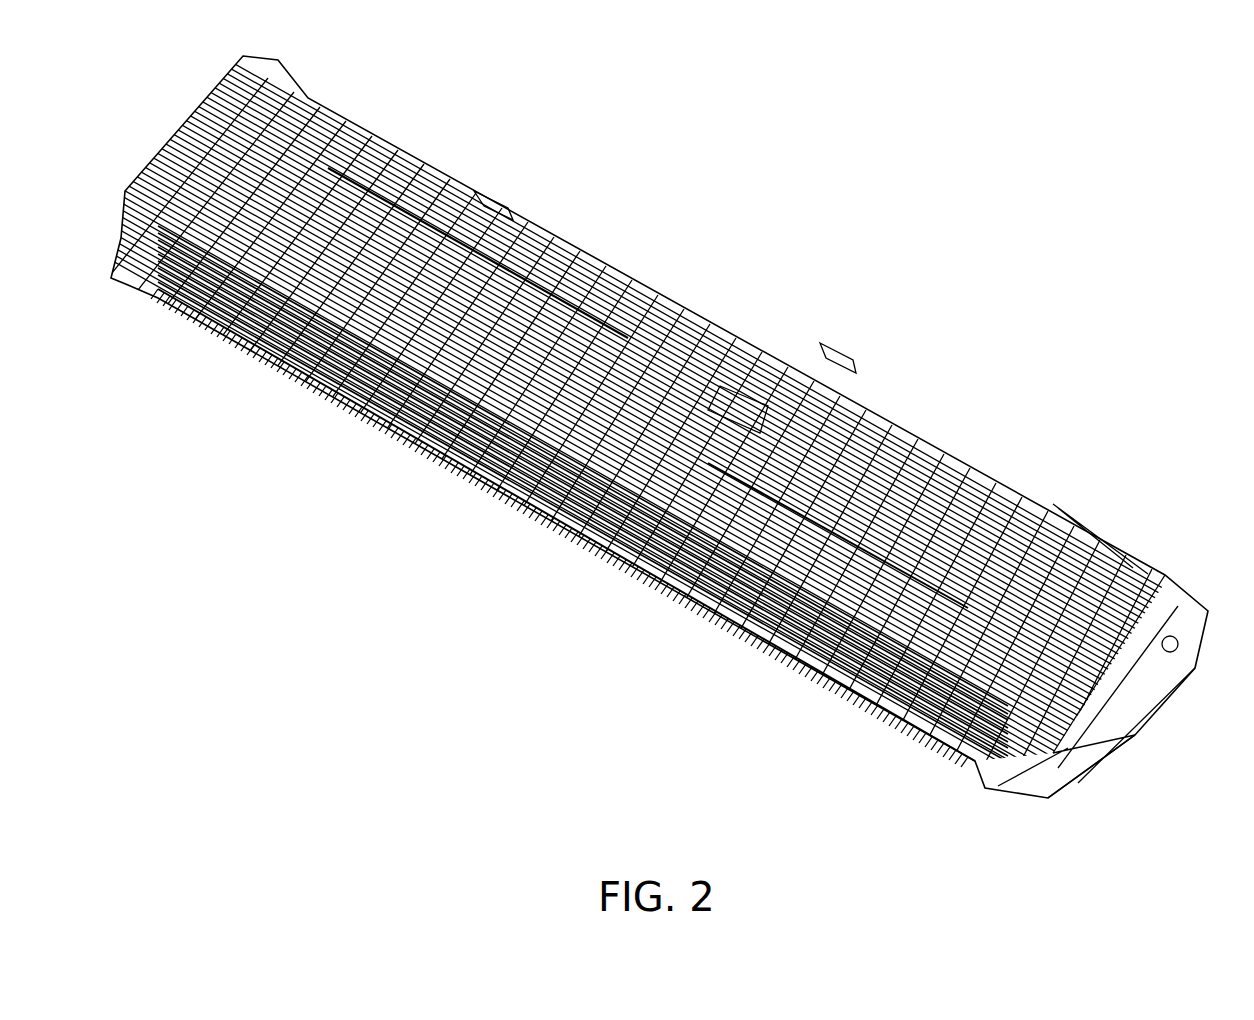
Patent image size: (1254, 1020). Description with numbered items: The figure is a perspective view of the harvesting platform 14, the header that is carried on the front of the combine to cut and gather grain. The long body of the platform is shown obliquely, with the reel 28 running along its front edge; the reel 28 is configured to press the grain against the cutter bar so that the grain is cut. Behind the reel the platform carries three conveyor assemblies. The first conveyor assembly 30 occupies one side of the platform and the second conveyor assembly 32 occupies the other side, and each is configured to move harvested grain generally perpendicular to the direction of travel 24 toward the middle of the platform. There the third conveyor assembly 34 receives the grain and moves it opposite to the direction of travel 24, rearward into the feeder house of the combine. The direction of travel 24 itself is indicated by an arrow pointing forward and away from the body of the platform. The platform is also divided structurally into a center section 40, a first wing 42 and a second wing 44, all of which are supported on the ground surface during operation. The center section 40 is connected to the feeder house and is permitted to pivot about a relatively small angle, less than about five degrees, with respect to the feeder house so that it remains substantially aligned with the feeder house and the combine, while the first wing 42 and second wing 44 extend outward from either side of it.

The harvesting platform 14 is at (780, 217).
The direction of travel 24 is at (470, 488).
The reel 28 is at (347, 395).
The first conveyor assembly 30 is at (413, 205).
The second conveyor assembly 32 is at (893, 540).
The third conveyor assembly 34 is at (735, 395).
The center section 40 is at (830, 340).
The first wing 42 is at (482, 187).
The second wing 44 is at (1043, 493).